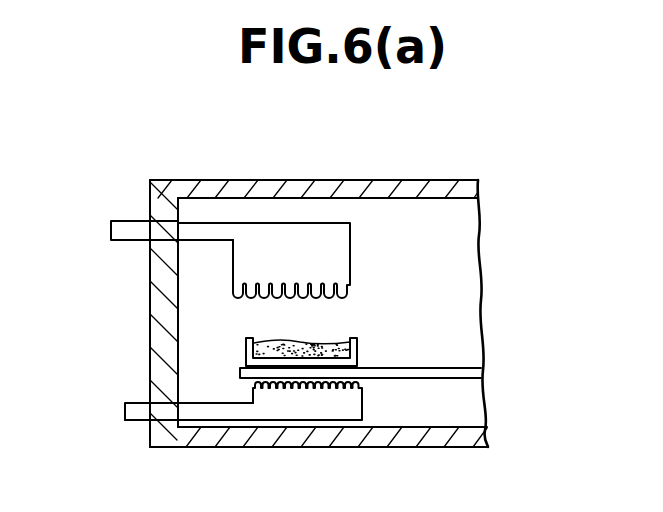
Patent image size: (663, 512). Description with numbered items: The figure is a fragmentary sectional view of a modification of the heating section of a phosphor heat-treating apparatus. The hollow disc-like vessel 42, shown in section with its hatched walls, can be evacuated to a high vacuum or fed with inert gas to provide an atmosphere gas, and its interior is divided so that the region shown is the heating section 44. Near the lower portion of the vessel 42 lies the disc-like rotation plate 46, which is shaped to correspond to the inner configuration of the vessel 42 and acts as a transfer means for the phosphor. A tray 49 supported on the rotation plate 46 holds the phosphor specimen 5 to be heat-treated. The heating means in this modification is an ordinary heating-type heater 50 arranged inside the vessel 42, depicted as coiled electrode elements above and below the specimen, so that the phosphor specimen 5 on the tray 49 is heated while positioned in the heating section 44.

The vessel 42 is at (457, 191).
The heating section 44 is at (432, 265).
The heating-type heater 50 is at (233, 276).
The tray 49 is at (358, 347).
The phosphor specimen 5 is at (335, 338).
The rotation plate 46 is at (445, 368).